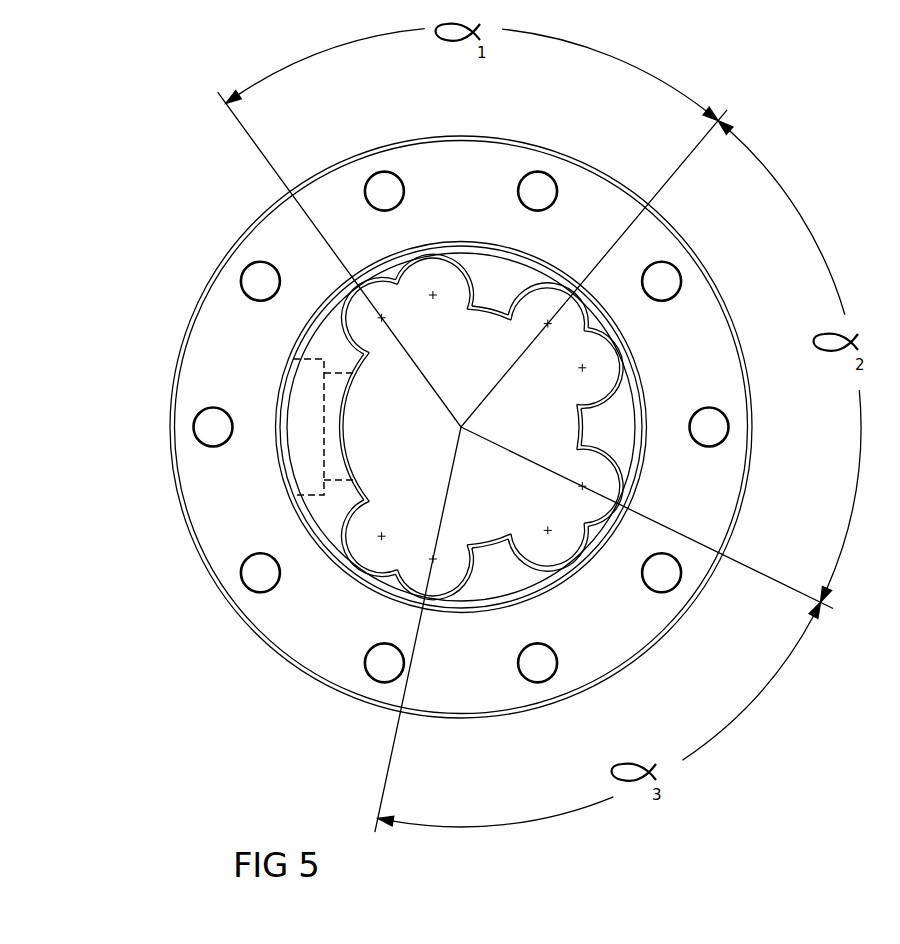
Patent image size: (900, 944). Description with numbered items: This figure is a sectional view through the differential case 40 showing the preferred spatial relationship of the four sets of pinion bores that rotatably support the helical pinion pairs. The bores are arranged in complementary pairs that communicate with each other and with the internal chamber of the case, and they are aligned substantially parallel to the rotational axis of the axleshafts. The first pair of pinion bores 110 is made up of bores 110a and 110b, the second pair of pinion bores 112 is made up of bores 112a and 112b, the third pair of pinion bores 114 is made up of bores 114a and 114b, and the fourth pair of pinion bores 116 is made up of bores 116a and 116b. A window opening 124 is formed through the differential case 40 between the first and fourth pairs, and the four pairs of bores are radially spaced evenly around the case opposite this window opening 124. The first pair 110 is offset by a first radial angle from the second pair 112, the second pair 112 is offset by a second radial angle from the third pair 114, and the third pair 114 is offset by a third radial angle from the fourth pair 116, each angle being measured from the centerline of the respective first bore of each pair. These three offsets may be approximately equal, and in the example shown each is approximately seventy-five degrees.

The differential case 40 is at (198, 370).
The first pair of pinion bores 110 is at (398, 200).
The pinion bore 110a is at (358, 333).
The pinion bore 110b is at (468, 289).
The second pair of pinion bores 112 is at (621, 245).
The pinion bore 112a is at (543, 308).
The pinion bore 112b is at (604, 374).
The third pair of pinion bores 114 is at (632, 578).
The pinion bore 114a is at (608, 490).
The pinion bore 114b is at (522, 553).
The fourth pair of pinion bores 116 is at (366, 644).
The pinion bore 116a is at (470, 574).
The pinion bore 116b is at (356, 516).
The window opening 124 is at (303, 437).